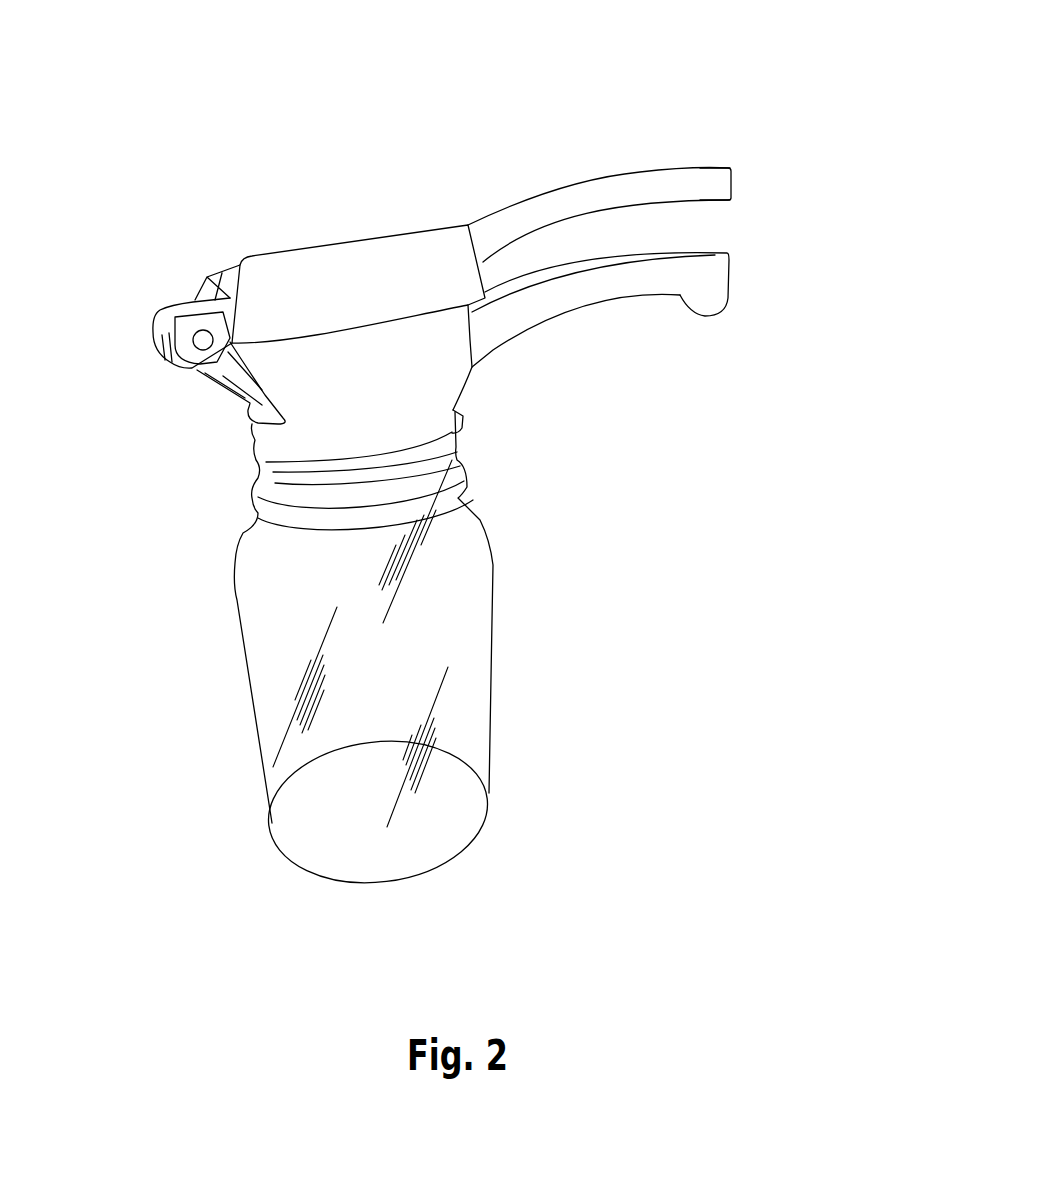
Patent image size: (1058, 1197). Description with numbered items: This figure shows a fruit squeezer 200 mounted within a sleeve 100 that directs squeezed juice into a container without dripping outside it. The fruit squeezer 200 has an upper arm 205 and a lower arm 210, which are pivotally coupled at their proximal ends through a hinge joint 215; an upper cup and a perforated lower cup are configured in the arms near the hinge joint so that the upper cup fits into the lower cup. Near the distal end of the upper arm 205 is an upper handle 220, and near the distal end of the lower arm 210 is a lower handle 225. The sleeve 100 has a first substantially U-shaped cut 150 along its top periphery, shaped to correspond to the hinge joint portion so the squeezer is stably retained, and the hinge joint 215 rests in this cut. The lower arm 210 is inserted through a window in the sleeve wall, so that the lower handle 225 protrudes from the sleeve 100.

The fruit squeezer 200 is at (680, 83).
The sleeve 100 is at (325, 227).
The first substantially U-shaped cut 150 is at (198, 284).
The hinge joint 215 is at (163, 325).
The upper handle 220 is at (575, 195).
The upper arm 205 is at (720, 183).
The lower arm 210 is at (717, 278).
The lower handle 225 is at (552, 312).